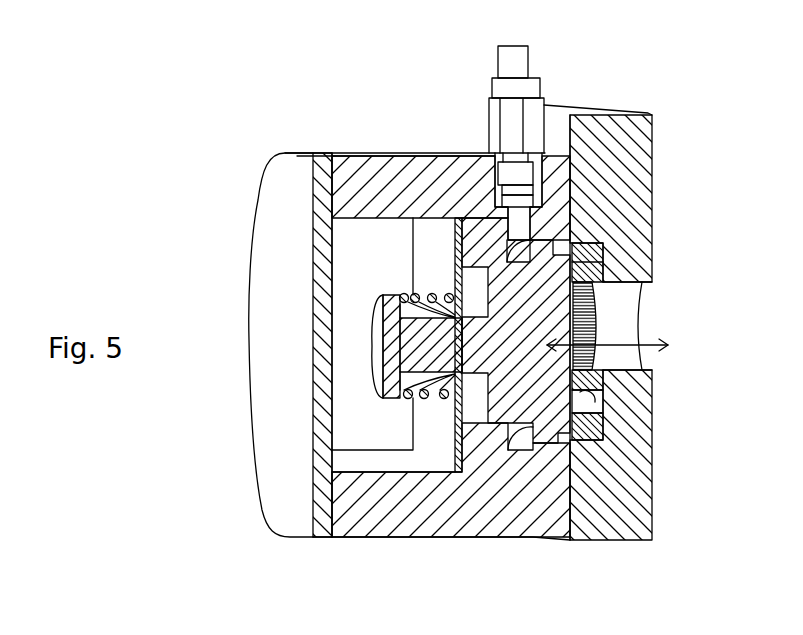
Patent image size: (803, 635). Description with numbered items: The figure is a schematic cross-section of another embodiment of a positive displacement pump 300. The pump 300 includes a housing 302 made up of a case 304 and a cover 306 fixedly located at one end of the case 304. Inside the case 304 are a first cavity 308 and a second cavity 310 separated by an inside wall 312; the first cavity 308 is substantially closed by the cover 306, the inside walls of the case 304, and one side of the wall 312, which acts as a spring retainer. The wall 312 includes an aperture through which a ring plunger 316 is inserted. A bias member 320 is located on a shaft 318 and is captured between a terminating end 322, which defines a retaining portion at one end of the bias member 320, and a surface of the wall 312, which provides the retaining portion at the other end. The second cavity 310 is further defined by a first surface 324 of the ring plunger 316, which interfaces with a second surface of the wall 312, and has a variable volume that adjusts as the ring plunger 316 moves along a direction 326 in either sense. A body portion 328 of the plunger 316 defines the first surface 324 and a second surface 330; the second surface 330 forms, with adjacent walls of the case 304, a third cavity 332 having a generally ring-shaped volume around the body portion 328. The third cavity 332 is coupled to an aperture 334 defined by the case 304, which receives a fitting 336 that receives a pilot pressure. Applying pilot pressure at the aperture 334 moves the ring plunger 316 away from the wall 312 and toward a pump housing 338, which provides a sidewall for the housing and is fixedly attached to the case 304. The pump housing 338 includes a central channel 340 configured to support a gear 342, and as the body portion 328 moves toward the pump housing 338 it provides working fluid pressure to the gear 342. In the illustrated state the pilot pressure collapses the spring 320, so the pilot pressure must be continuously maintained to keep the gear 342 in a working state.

The pump 300 is at (266, 131).
The housing 302 is at (263, 514).
The case 304 is at (355, 172).
The cover 306 is at (277, 196).
The first cavity 308 is at (347, 255).
The second cavity 310 is at (513, 251).
The inside wall 312 is at (440, 437).
The ring plunger 316 is at (592, 500).
The shaft 318 is at (403, 357).
The bias member 320 is at (406, 400).
The terminating end 322 is at (375, 325).
The first surface 324 is at (543, 418).
The direction 326 is at (648, 345).
The body portion 328 is at (530, 305).
The second surface 330 is at (523, 253).
The third cavity 332 is at (466, 263).
The aperture 334 is at (540, 218).
The fitting 336 is at (533, 88).
The pump housing 338 is at (637, 488).
The central channel 340 is at (638, 357).
The gear 342 is at (593, 327).